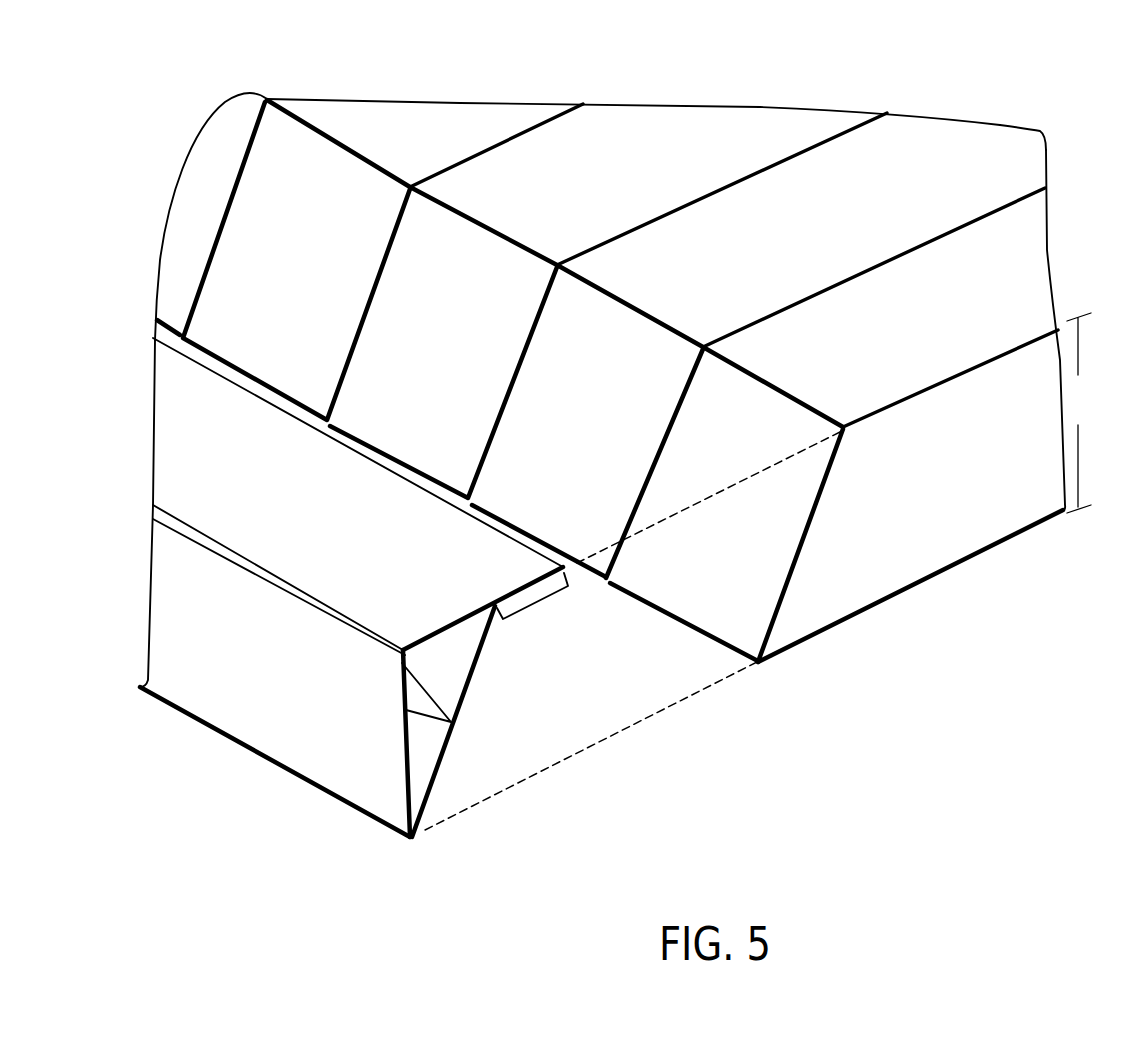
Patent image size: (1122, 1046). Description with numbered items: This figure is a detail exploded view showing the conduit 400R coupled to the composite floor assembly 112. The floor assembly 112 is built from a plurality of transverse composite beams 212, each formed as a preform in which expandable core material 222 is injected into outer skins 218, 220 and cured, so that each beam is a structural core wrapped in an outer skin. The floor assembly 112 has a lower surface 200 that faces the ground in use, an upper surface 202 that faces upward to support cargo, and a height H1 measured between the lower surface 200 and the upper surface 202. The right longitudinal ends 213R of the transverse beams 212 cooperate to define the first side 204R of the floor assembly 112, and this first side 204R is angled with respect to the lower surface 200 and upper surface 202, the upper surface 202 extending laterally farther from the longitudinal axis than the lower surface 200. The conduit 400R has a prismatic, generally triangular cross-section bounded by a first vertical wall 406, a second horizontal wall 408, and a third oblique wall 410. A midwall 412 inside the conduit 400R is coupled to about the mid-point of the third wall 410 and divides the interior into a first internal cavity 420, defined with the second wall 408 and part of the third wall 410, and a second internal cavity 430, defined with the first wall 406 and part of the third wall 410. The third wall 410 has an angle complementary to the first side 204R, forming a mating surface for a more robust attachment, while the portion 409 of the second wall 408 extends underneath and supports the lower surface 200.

The lower surface 200 is at (778, 135).
The floor assembly 112 is at (1044, 124).
The transverse composite beam 212 is at (394, 148).
The outer skin 218 is at (337, 125).
The outer skin 220 is at (492, 145).
The expandable core material 222 is at (199, 180).
The longitudinal end 213R is at (598, 591).
The first side 204R is at (830, 522).
The upper surface 202 is at (796, 654).
The height H1 is at (1079, 413).
The second horizontal wall 408 is at (297, 518).
The first vertical wall 406 is at (251, 682).
The conduit 400R is at (180, 728).
The first internal cavity 420 is at (431, 670).
The midwall 412 is at (414, 694).
The third oblique wall 410 is at (448, 767).
The second internal cavity 430 is at (404, 755).
The portion of second wall 409 is at (537, 601).